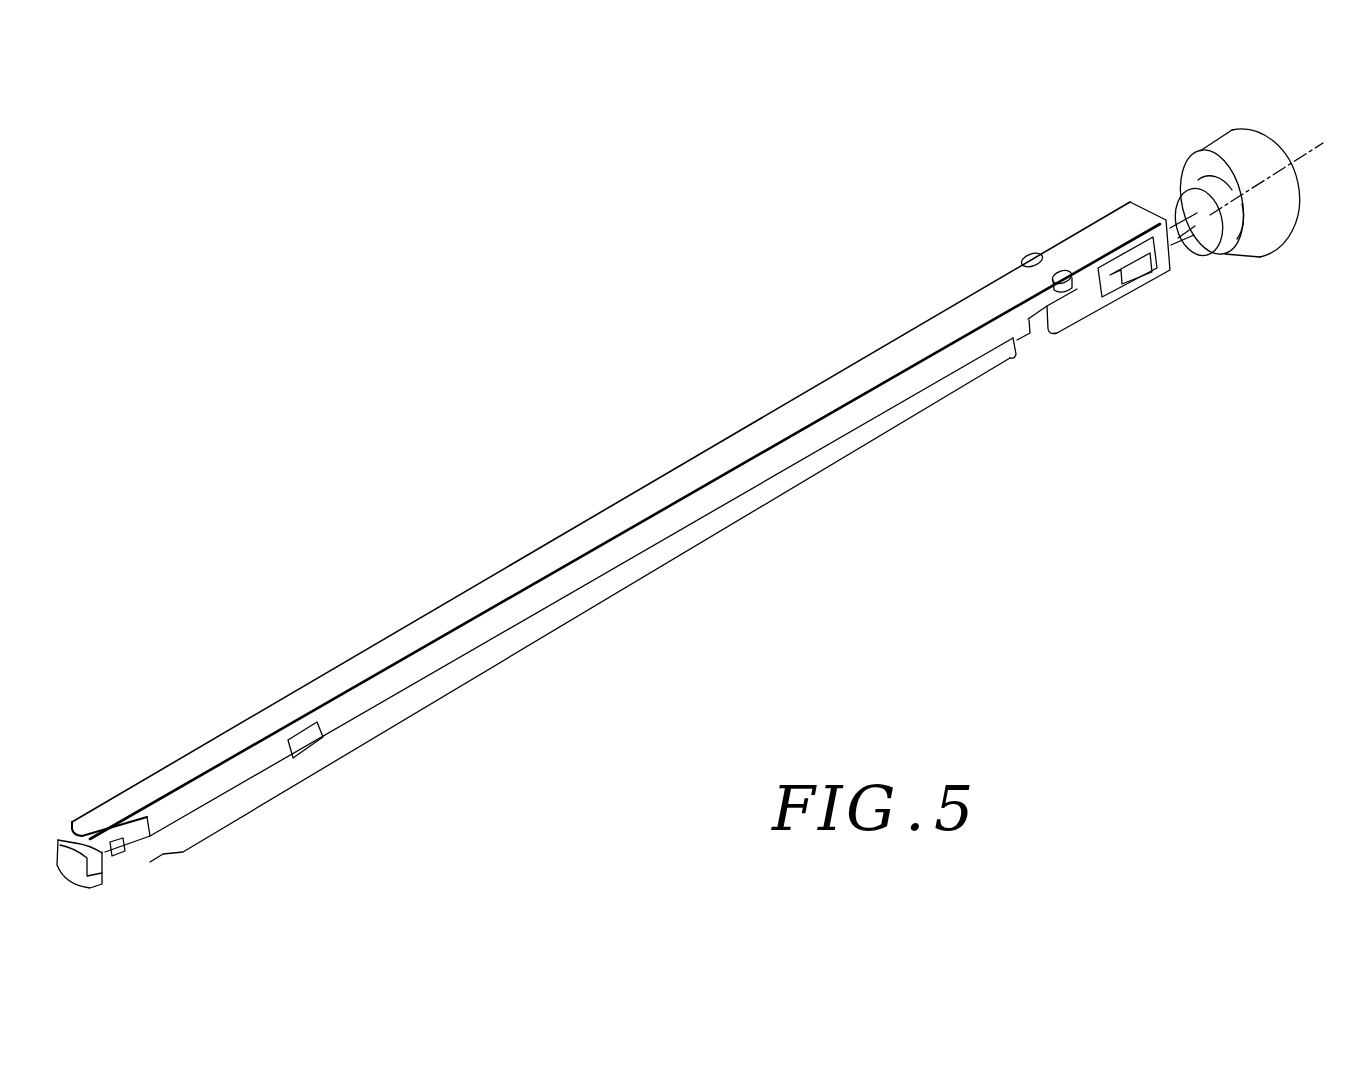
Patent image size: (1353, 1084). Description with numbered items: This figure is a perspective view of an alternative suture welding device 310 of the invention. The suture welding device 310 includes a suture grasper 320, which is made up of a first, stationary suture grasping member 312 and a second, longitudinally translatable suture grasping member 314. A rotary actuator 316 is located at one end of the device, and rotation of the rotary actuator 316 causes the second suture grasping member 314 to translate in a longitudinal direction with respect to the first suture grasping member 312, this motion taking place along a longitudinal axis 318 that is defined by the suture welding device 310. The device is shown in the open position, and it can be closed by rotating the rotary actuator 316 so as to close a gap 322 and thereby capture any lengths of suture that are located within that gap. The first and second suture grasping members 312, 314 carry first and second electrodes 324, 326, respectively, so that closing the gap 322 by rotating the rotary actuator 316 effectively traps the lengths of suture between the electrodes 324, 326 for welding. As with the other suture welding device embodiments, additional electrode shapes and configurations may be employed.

The suture welding device 310 is at (516, 407).
The first suture grasping member 312 is at (740, 428).
The second suture grasping member 314 is at (718, 533).
The rotary actuator 316 is at (1193, 153).
The longitudinal axis 318 is at (1306, 152).
The suture grasper 320 is at (114, 749).
The gap 322 is at (112, 857).
The first electrode 324 is at (147, 845).
The second electrode 326 is at (60, 836).